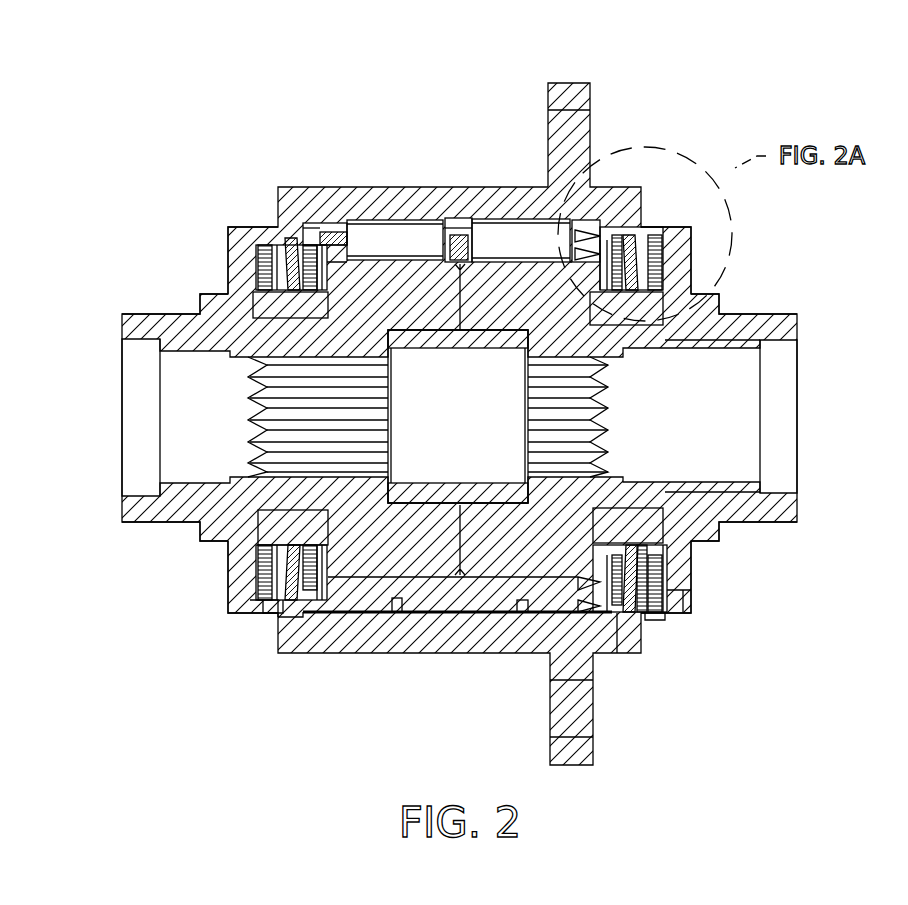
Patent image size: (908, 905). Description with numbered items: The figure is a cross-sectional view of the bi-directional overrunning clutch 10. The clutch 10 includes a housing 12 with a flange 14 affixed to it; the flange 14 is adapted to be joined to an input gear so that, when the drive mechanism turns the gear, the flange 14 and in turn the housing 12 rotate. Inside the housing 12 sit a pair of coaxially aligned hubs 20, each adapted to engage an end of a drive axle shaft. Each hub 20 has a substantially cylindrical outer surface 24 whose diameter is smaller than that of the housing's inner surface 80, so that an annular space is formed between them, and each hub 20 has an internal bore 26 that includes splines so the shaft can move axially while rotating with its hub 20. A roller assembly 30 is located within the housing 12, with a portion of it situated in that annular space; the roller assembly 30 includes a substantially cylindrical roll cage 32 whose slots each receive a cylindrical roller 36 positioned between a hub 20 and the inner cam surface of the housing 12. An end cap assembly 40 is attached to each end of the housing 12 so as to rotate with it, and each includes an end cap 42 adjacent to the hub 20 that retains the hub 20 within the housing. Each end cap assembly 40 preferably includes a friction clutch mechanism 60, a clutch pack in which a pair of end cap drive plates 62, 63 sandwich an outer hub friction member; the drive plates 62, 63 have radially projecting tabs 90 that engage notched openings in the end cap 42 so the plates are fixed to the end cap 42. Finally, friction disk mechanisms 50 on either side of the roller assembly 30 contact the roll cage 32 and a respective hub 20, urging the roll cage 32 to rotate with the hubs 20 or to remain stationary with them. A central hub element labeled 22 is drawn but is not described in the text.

The bi-directional overrunning clutch 10 is at (706, 60).
The housing 12 is at (420, 197).
The flange 14 is at (570, 100).
The hub 20 is at (363, 548).
The hub 22 is at (430, 342).
The outer surface 24 is at (398, 577).
The internal bore 26 is at (285, 415).
The roller assembly 30 is at (321, 233).
The roll cage 32 is at (462, 232).
The roller 36 is at (389, 237).
The end cap assembly 40 is at (190, 294).
The end cap 42 is at (237, 278).
The friction disk mechanism 50 is at (308, 233).
The friction clutch mechanism 60 is at (263, 235).
The end cap drive plate 62 is at (637, 598).
The end cap drive plate 63 is at (660, 594).
The inner surface 80 is at (330, 220).
The radially projecting tabs 90 is at (257, 615).